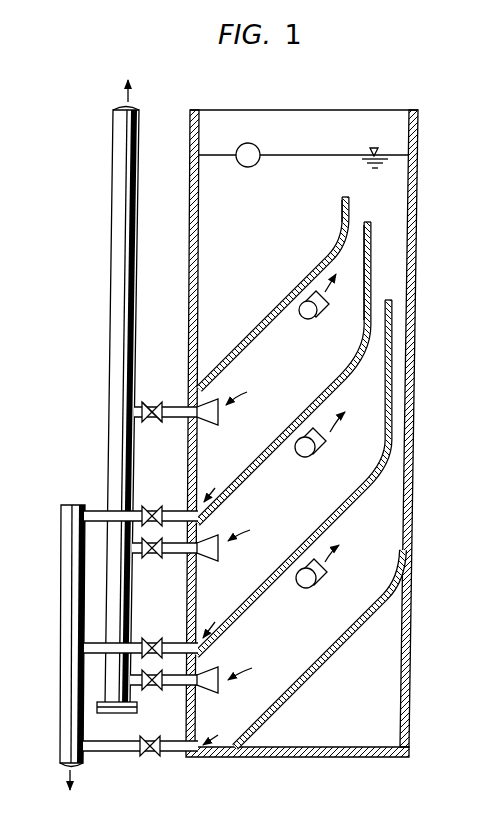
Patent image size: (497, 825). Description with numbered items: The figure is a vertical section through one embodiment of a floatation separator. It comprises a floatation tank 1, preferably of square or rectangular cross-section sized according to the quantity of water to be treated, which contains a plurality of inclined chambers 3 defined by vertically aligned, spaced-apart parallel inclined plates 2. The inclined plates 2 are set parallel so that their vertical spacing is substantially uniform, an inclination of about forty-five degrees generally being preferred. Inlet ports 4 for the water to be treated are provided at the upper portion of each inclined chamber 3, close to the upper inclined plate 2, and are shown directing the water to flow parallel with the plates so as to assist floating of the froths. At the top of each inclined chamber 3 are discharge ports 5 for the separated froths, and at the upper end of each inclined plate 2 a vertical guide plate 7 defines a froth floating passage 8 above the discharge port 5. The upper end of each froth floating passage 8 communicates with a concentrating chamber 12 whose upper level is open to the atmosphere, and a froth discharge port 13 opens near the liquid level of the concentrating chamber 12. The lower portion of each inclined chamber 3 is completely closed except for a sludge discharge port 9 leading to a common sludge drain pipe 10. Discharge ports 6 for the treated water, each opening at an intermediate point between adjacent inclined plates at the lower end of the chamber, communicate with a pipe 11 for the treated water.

The floatation tank 1 is at (410, 372).
The inclined plate 2 is at (266, 326).
The inclined chamber 3 is at (282, 365).
The inlet port 4 is at (314, 318).
The discharge port for froths 5 is at (350, 243).
The discharge port for treated water 6 is at (218, 410).
The vertical guide plate 7 is at (349, 199).
The froth floating passage 8 is at (342, 225).
The sludge discharge port 9 is at (178, 511).
The sludge drain pipe 10 is at (60, 750).
The pipe for treated water 11 is at (113, 375).
The concentrating chamber 12 is at (313, 163).
The froth discharge port 13 is at (249, 143).